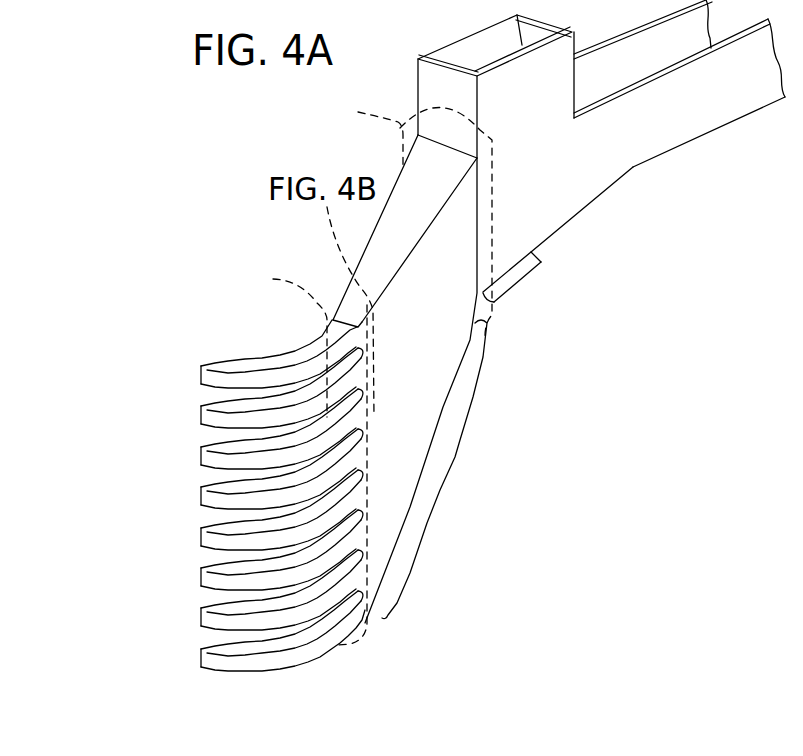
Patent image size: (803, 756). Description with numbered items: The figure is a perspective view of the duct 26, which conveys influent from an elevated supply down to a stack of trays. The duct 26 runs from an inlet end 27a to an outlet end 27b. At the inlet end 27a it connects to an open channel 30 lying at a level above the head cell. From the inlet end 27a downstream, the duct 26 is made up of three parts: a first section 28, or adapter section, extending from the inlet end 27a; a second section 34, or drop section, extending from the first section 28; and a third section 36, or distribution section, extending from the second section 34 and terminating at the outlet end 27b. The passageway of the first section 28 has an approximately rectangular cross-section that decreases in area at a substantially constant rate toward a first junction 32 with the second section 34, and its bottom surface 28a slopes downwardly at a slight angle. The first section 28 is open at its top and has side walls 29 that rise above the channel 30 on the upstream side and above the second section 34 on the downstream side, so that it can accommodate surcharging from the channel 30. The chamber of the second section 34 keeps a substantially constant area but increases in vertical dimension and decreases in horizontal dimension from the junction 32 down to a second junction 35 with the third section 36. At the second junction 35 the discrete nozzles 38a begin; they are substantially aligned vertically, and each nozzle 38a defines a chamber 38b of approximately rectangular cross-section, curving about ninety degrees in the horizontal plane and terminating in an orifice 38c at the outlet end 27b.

The duct 26 is at (268, 247).
The inlet end 27a is at (645, 222).
The outlet end 27b is at (112, 535).
The first section 28 is at (637, 180).
The bottom surface 28a is at (540, 263).
The side walls 29 is at (524, 45).
The open channel 30 is at (647, 83).
The first junction 32 is at (410, 216).
The second section 34 is at (455, 445).
The second junction 35 is at (304, 456).
The third section 36 is at (283, 528).
The nozzles 38a is at (365, 657).
The chamber 38b is at (207, 362).
The orifice 38c is at (282, 368).